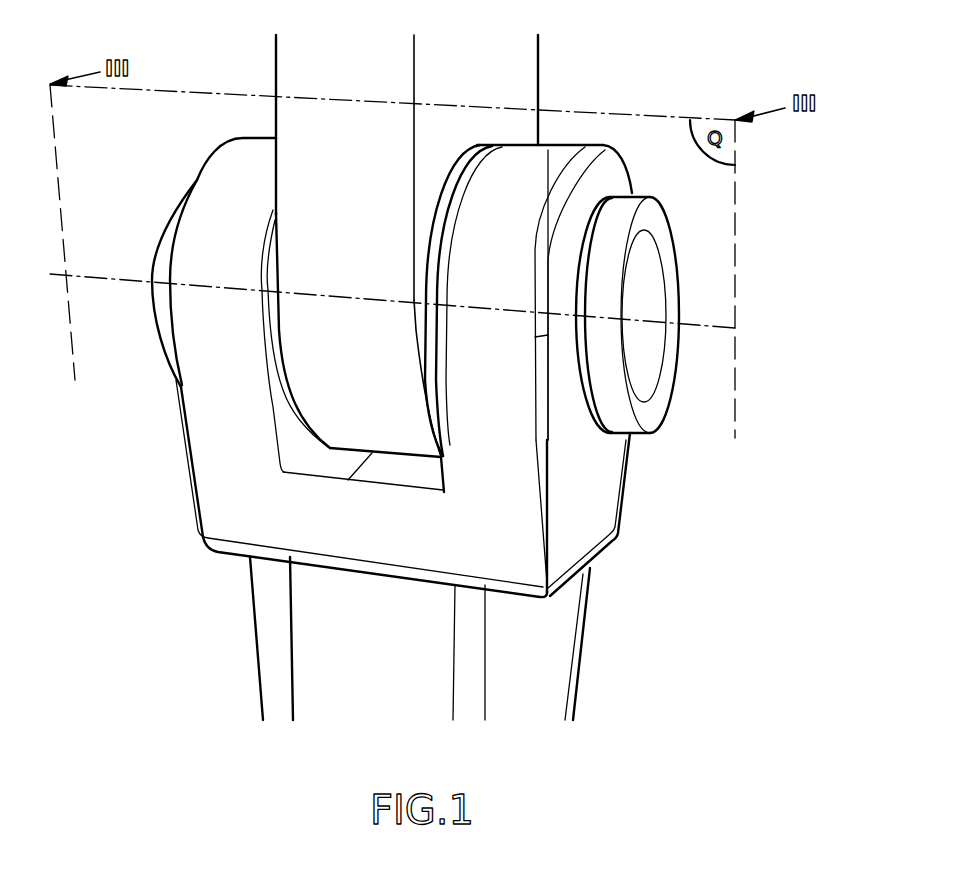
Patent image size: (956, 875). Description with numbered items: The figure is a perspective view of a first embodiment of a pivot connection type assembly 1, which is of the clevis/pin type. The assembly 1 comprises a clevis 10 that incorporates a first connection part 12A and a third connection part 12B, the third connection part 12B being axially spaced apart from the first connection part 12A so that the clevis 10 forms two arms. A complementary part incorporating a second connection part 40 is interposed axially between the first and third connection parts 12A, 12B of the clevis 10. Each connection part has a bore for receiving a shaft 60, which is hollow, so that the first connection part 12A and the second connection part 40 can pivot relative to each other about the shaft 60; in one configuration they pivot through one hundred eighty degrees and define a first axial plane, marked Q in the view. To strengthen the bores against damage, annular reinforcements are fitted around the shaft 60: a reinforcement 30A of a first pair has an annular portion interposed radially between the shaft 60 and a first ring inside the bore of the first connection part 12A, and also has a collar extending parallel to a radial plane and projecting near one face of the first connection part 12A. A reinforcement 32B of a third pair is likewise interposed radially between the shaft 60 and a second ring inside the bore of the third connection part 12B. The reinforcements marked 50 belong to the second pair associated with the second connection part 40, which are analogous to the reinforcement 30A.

The pivot connection type assembly 1 is at (706, 61).
The clevis 10 is at (617, 509).
The first connection part 12A is at (550, 160).
The third connection part 12B is at (223, 173).
The reinforcement 30A is at (607, 197).
The reinforcement 32B is at (270, 342).
The second connection part 40 is at (287, 65).
The ring 50 is at (457, 168).
The shaft 60 is at (651, 266).